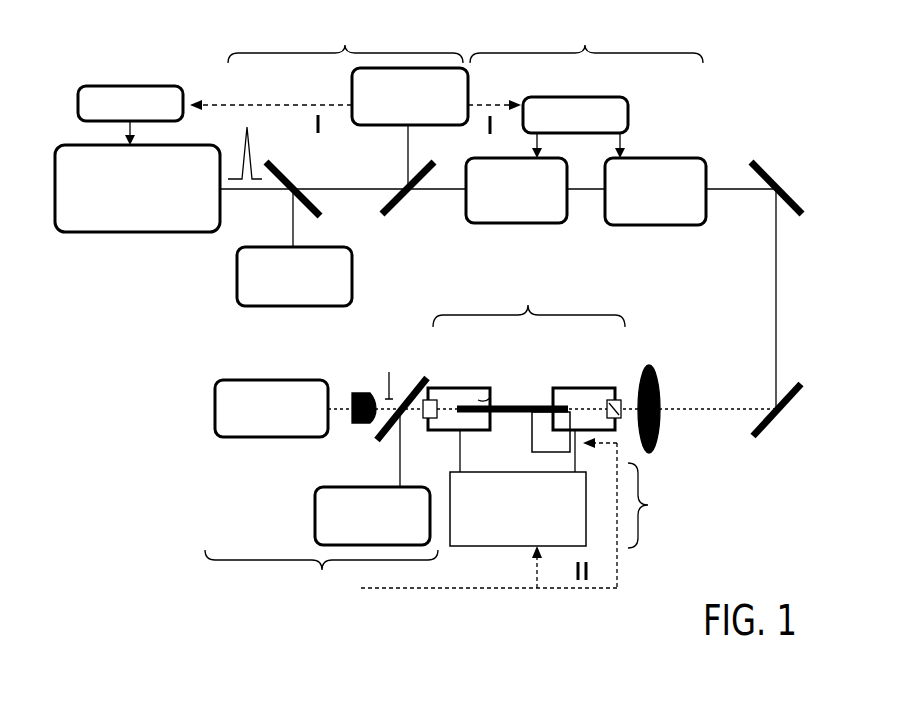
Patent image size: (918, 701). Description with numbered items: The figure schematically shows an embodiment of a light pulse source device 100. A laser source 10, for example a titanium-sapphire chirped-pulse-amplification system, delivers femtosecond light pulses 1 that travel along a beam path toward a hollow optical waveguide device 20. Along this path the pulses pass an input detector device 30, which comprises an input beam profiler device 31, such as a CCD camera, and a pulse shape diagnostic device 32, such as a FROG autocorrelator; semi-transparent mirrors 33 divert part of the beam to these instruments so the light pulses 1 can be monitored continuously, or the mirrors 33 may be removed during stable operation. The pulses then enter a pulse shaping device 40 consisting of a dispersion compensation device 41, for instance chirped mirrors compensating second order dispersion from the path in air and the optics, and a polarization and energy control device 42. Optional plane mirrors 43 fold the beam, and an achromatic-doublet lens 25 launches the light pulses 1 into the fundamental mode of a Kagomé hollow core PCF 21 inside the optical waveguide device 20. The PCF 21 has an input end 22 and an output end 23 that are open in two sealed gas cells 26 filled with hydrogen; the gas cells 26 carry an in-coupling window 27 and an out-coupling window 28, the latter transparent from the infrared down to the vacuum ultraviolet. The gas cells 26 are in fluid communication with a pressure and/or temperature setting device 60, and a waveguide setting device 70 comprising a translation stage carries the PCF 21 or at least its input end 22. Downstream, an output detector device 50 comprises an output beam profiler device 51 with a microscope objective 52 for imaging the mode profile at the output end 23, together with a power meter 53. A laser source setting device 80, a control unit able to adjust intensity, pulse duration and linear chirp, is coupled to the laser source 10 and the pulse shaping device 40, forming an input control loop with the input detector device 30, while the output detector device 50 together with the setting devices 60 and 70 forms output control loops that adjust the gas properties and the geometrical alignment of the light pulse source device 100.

The light pulse source device 100 is at (740, 108).
The laser source setting device 80 is at (172, 120).
The laser source 10 is at (205, 217).
The light pulses 1 is at (243, 165).
The input detector device 30 is at (358, 40).
The input beam profiler device 31 is at (294, 247).
The pulse shape diagnostic device 32 is at (410, 128).
The semi-transparent mirrors 33 is at (390, 187).
The pulse shaping device 40 is at (599, 40).
The dispersion compensation device 41 is at (516, 190).
The polarization and energy control device 42 is at (655, 191).
The plane mirrors 43 is at (798, 220).
The hollow optical waveguide device 20 is at (540, 303).
The Kagomé hollow core PCF 21 is at (508, 418).
The input end 22 is at (568, 405).
The output end 23 is at (462, 403).
The sealed gas cells 26 is at (560, 402).
The in-coupling window 27 is at (610, 401).
The out-coupling window 28 is at (436, 401).
The waveguide setting device 70 is at (527, 456).
The achromatic-doublet lens 25 is at (660, 437).
The output detector device 50 is at (335, 603).
The output beam profiler device 51 is at (271, 408).
The microscope objective 52 is at (350, 397).
The power meter 53 is at (372, 516).
The pressure and/or temperature setting device 60 is at (678, 523).